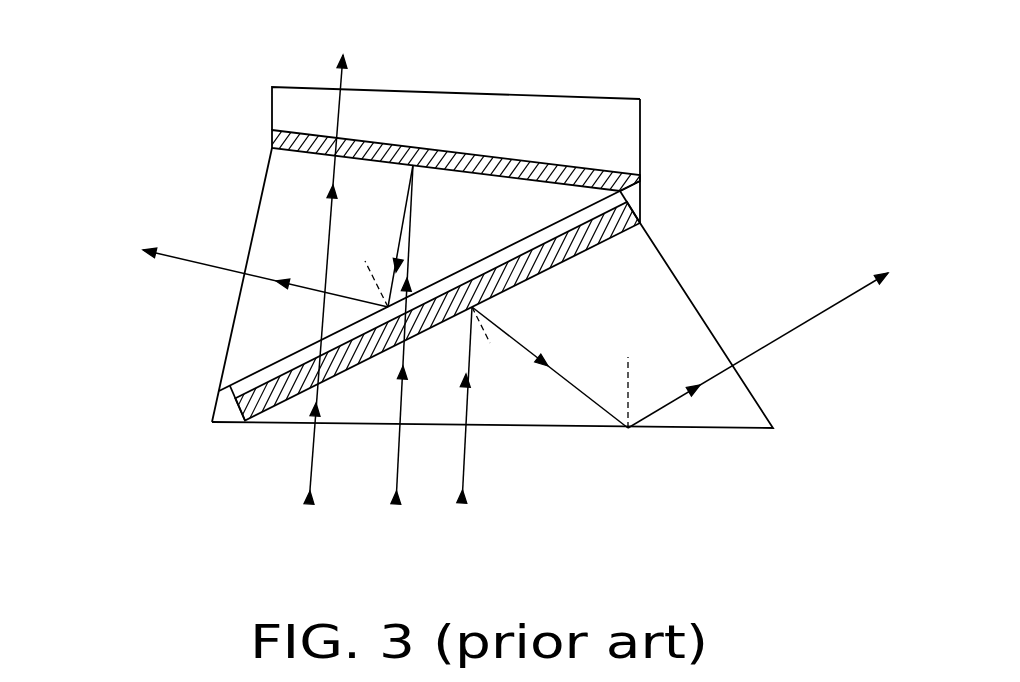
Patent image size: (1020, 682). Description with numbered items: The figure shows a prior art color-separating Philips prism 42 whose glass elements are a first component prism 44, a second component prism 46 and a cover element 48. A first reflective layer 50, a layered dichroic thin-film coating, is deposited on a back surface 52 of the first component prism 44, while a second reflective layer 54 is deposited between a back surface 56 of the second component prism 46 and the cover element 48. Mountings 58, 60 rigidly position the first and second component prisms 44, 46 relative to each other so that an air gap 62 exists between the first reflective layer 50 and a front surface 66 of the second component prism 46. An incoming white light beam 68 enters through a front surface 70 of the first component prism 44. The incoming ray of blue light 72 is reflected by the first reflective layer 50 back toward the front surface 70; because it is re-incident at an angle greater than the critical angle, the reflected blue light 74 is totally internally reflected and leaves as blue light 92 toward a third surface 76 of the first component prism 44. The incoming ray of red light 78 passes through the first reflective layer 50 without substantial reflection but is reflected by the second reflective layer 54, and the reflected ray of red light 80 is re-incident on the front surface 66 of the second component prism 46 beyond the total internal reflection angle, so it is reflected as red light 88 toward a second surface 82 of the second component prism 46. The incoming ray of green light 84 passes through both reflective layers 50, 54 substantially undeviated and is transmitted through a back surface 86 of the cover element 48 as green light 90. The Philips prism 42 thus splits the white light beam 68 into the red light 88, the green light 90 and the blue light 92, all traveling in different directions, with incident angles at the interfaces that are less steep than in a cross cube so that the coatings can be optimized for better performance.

The Philips prism 42 is at (232, 165).
The first component prism 44 is at (538, 415).
The second component prism 46 is at (320, 246).
The cover element 48 is at (497, 147).
The first reflective layer 50 is at (583, 251).
The back surface 52 is at (508, 287).
The second reflective layer 54 is at (528, 163).
The back surface 56 is at (487, 177).
The mounting 58 is at (223, 408).
The mounting 60 is at (628, 200).
The air gap 62 is at (446, 293).
The front surface 66 is at (274, 364).
The incoming white light beam 68 is at (342, 596).
The front surface 70 is at (518, 428).
The incoming ray of blue light 72 is at (465, 463).
The reflected blue light 74 is at (583, 395).
The third surface 76 is at (682, 288).
The incoming ray of red light 78 is at (397, 447).
The reflected ray of red light 80 is at (398, 250).
The second surface 82 is at (246, 252).
The incoming ray of green light 84 is at (309, 468).
The back surface 86 is at (420, 92).
The red light 88 is at (135, 287).
The green light 90 is at (323, 66).
The blue light 92 is at (898, 329).